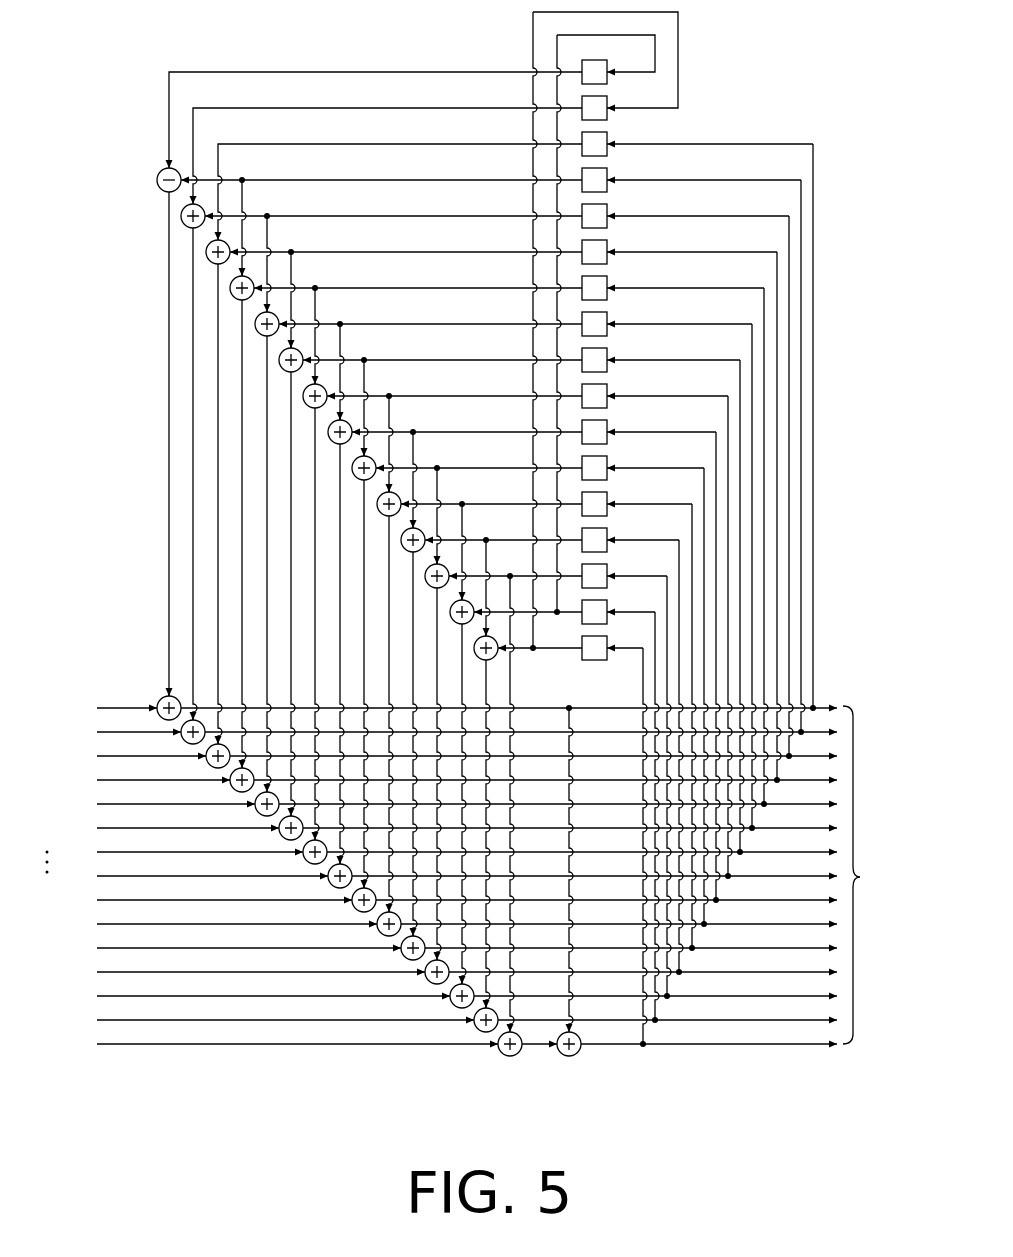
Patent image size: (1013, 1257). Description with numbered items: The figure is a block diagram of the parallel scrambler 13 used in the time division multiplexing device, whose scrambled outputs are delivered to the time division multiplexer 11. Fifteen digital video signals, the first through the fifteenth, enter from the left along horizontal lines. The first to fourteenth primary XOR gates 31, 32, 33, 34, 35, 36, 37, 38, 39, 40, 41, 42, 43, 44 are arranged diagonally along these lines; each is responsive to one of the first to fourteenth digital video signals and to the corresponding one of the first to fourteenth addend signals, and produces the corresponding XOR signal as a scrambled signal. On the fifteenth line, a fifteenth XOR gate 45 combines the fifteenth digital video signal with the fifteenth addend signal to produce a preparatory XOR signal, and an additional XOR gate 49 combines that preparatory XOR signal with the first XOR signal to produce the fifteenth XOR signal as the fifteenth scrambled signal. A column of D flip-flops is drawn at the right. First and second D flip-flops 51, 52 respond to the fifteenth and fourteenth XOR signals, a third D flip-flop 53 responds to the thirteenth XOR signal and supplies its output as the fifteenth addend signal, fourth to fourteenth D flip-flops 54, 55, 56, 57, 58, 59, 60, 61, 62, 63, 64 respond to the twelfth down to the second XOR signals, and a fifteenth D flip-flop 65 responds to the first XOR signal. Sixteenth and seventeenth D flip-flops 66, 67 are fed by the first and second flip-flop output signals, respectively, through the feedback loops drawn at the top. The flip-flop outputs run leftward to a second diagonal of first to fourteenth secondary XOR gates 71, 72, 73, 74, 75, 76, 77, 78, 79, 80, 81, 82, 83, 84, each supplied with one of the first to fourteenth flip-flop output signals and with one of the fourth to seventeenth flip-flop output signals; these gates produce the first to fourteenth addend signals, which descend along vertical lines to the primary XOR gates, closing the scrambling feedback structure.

The time division multiplexer 11 is at (877, 875).
The parallel scrambler 13 is at (272, 1078).
The first primary XOR gate 31 is at (155, 705).
The second primary XOR gate 32 is at (179, 729).
The third primary XOR gate 33 is at (204, 753).
The fourth primary XOR gate 34 is at (228, 777).
The fifth primary XOR gate 35 is at (253, 801).
The sixth primary XOR gate 36 is at (277, 825).
The seventh primary XOR gate 37 is at (301, 849).
The eighth primary XOR gate 38 is at (326, 873).
The ninth primary XOR gate 39 is at (350, 897).
The tenth primary XOR gate 40 is at (375, 921).
The eleventh primary XOR gate 41 is at (399, 945).
The twelfth primary XOR gate 42 is at (423, 969).
The thirteenth primary XOR gate 43 is at (448, 993).
The fourteenth primary XOR gate 44 is at (472, 1017).
The fifteenth XOR gate 45 is at (496, 1041).
The additional XOR gate 49 is at (577, 1053).
The first D flip-flop 51 is at (608, 659).
The second D flip-flop 52 is at (608, 623).
The third D flip-flop 53 is at (608, 587).
The fourth D flip-flop 54 is at (608, 551).
The fifth D flip-flop 55 is at (608, 515).
The sixth D flip-flop 56 is at (608, 479).
The seventh D flip-flop 57 is at (608, 443).
The eighth D flip-flop 58 is at (608, 407).
The ninth D flip-flop 59 is at (608, 371).
The tenth D flip-flop 60 is at (608, 335).
The eleventh D flip-flop 61 is at (608, 299).
The twelfth D flip-flop 62 is at (608, 263).
The thirteenth D flip-flop 63 is at (608, 227).
The fourteenth D flip-flop 64 is at (608, 191).
The fifteenth D flip-flop 65 is at (608, 155).
The sixteenth D flip-flop 66 is at (608, 119).
The seventeenth D flip-flop 67 is at (608, 83).
The first secondary XOR gate 71 is at (163, 191).
The second secondary XOR gate 72 is at (187, 227).
The third secondary XOR gate 73 is at (212, 263).
The fourth secondary XOR gate 74 is at (236, 299).
The fifth secondary XOR gate 75 is at (261, 335).
The sixth secondary XOR gate 76 is at (285, 371).
The seventh secondary XOR gate 77 is at (309, 407).
The eighth secondary XOR gate 78 is at (334, 443).
The ninth secondary XOR gate 79 is at (358, 479).
The tenth secondary XOR gate 80 is at (383, 515).
The eleventh secondary XOR gate 81 is at (407, 551).
The twelfth secondary XOR gate 82 is at (431, 587).
The thirteenth secondary XOR gate 83 is at (456, 623).
The fourteenth secondary XOR gate 84 is at (480, 659).